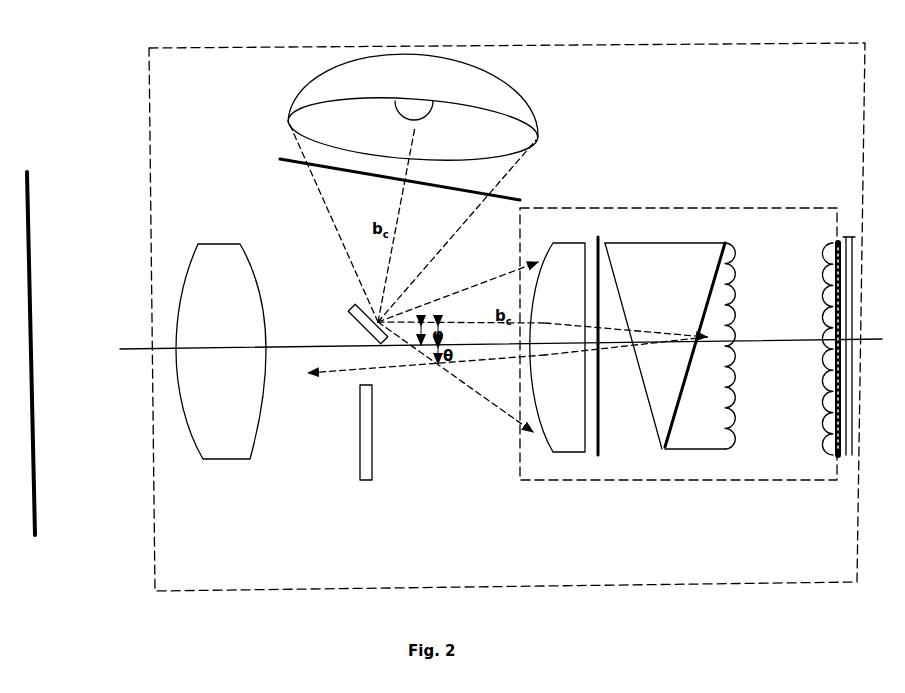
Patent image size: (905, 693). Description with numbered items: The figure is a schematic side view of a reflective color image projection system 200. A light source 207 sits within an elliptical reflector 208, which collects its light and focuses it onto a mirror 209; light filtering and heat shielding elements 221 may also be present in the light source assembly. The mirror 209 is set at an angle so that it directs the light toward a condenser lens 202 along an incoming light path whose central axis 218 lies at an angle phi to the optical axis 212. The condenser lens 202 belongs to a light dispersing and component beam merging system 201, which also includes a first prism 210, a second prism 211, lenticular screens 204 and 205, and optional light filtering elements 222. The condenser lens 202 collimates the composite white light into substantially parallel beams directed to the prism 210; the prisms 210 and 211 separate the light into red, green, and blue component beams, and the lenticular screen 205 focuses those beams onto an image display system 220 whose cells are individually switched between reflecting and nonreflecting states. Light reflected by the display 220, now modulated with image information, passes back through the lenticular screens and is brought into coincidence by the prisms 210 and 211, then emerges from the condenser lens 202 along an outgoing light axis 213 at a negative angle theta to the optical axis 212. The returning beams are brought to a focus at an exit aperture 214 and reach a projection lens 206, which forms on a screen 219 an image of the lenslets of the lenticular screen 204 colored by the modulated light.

The reflective color image projection system 200 is at (123, 110).
The light dispersing and component beam merging system 201 is at (677, 207).
The condenser lens 202 is at (553, 453).
The lenticular screen 204 is at (725, 450).
The lenticular screen 205 is at (827, 453).
The projection lens 206 is at (232, 453).
The light source 207 is at (428, 118).
The elliptical reflector 208 is at (298, 88).
The mirror 209 is at (352, 313).
The first prism 210 is at (662, 382).
The second prism 211 is at (695, 428).
The optical axis 212 is at (125, 352).
The outgoing light axis 213 is at (303, 378).
The exit aperture 214 is at (390, 381).
The central axis of incoming light 218 is at (397, 227).
The screen 219 is at (35, 505).
The image display system 220 is at (847, 456).
The light filtering and heat shielding elements 221 is at (372, 177).
The light filtering elements 222 is at (596, 456).